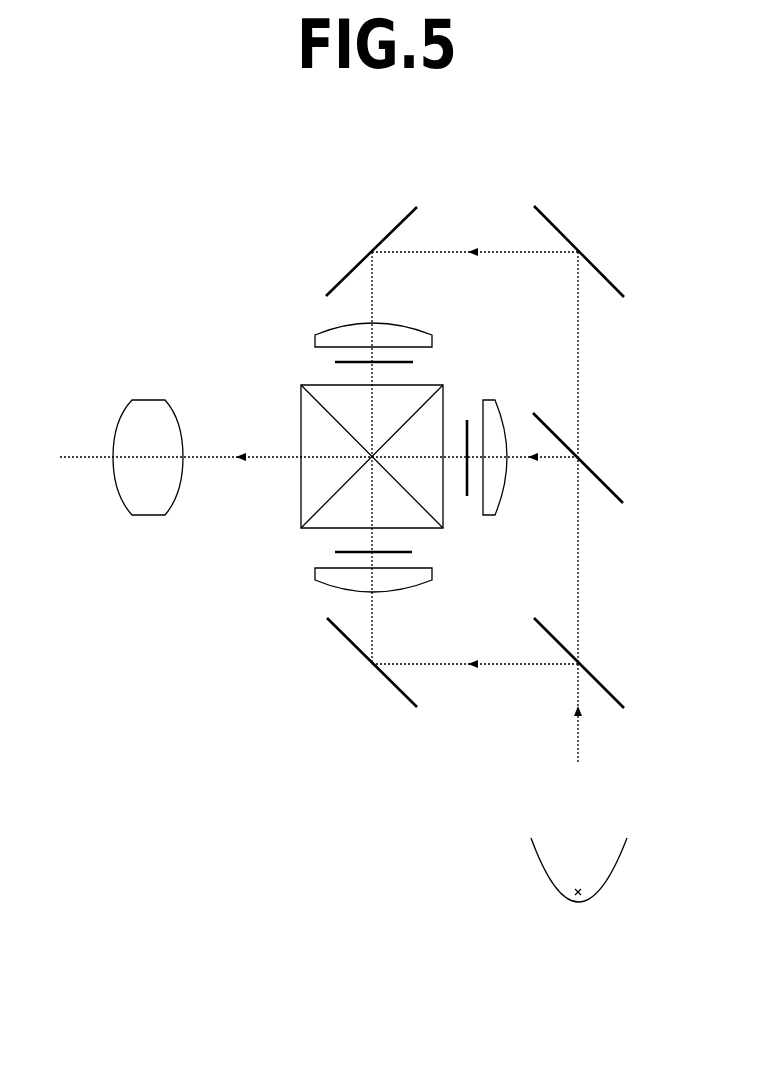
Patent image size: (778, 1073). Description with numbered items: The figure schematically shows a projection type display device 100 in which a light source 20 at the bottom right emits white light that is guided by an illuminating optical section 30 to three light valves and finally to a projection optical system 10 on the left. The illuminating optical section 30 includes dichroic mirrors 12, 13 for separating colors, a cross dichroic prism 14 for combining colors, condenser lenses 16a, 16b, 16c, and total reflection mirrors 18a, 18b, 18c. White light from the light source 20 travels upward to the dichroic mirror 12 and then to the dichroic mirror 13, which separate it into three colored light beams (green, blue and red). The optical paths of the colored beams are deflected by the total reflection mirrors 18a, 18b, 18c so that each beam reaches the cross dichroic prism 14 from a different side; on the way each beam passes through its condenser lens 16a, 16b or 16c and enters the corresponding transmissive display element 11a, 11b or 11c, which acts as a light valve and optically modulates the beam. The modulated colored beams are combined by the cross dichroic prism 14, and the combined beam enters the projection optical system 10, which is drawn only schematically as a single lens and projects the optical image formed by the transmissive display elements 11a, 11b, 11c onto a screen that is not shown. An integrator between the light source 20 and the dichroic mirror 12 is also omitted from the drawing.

The projection type display device 100 is at (445, 148).
The projection optical system 10 is at (149, 395).
The transmissive display element 11a is at (343, 552).
The transmissive display element 11b is at (466, 420).
The transmissive display element 11c is at (340, 365).
The dichroic mirror 12 is at (602, 687).
The dichroic mirror 13 is at (607, 480).
The cross dichroic prism 14 is at (300, 488).
The condenser lens 16a is at (408, 589).
The condenser lens 16b is at (503, 493).
The condenser lens 16c is at (410, 325).
The total reflection mirror 18a is at (345, 640).
The total reflection mirror 18b is at (607, 278).
The total reflection mirror 18c is at (347, 277).
The light source 20 is at (628, 859).
The illuminating optical section 30 is at (262, 765).